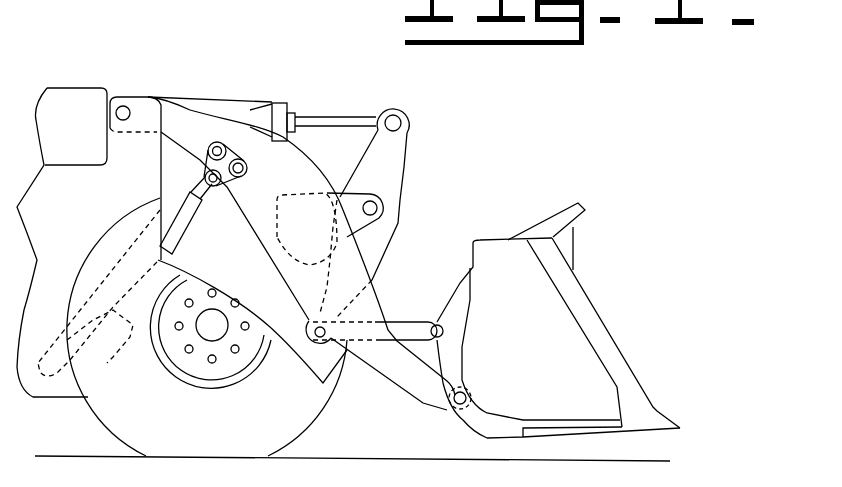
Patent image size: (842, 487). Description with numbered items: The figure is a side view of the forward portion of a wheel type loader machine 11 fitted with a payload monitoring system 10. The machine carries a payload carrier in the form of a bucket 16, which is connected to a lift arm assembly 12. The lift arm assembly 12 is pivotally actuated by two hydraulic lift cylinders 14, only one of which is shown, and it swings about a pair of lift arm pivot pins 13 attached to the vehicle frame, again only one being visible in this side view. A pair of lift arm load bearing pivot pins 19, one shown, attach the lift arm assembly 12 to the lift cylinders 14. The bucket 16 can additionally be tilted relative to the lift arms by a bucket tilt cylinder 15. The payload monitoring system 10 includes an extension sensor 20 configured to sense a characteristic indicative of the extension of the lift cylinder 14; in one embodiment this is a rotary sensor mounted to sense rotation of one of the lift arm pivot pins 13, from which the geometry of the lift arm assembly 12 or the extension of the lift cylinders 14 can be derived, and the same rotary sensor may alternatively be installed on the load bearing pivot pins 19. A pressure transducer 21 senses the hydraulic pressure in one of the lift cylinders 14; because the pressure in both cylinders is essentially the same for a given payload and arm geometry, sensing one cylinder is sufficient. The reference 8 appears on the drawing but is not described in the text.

The lift arm linkage 8 is at (248, 110).
The payload monitoring system 10 is at (509, 134).
The wheel type loader machine 11 is at (89, 140).
The lift arm assembly 12 is at (174, 113).
The lift arm pivot pin 13 is at (117, 103).
The hydraulic lift cylinder 14 is at (183, 220).
The bucket tilt cylinder 15 is at (257, 103).
The bucket 16 is at (490, 247).
The lift arm load bearing pivot pin 19 is at (207, 160).
The extension sensor 20 is at (133, 107).
The pressure transducer 21 is at (107, 363).